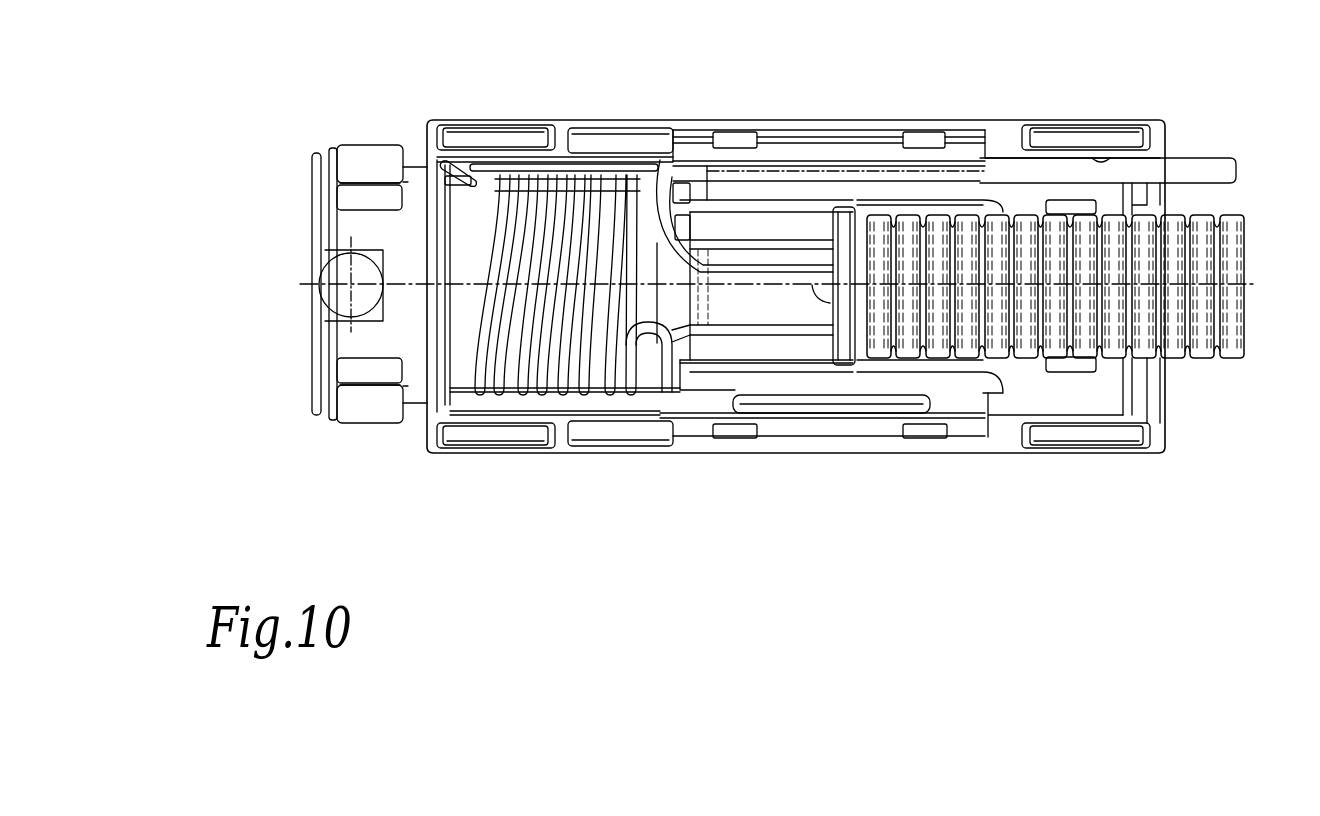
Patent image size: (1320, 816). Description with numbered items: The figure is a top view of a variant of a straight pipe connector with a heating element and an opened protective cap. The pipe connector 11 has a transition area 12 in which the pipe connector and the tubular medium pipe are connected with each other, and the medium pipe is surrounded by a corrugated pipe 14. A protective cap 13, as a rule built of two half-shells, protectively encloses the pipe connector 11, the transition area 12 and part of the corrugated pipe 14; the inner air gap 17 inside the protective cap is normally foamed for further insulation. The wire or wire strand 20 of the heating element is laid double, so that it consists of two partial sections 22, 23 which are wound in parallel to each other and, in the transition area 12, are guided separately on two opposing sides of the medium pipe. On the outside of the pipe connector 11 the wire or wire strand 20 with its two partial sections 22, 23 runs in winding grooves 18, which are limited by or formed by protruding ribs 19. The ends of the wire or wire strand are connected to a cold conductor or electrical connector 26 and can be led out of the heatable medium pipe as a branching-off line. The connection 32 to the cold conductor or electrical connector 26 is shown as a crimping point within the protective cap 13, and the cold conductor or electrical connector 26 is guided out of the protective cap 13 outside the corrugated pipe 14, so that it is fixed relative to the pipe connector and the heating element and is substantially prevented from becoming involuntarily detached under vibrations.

The pipe connector 11 is at (845, 120).
The transition area 12 is at (757, 227).
The protective cap 13 is at (858, 453).
The corrugated pipe 14 is at (1050, 245).
The inner air gap 17 is at (715, 413).
The winding grooves 18 is at (506, 125).
The protruding ribs 19 is at (540, 128).
The wire or wire strand 20 is at (581, 130).
The partial section 22 is at (667, 155).
The partial section 23 is at (640, 335).
The cold conductor or electrical connector 26 is at (1204, 168).
The connection 32 is at (945, 160).